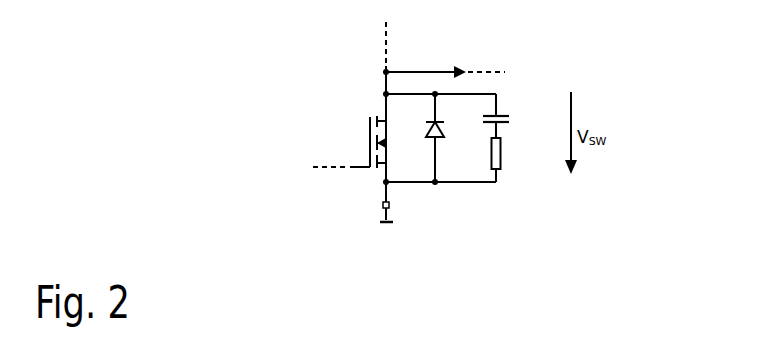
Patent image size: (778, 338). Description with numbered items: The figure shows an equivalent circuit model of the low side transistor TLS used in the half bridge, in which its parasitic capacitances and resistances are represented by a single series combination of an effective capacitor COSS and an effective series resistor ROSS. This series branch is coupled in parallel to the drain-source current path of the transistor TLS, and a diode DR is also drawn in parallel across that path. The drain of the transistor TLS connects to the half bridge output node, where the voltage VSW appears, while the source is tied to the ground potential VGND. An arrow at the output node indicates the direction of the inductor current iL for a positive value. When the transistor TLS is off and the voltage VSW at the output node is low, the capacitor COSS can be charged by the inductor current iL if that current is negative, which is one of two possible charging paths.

The voltage at the half bridge output node VSW is at (386, 72).
The inductor current iL is at (445, 63).
The low side transistor TLS is at (349, 142).
The rectifier diode DR is at (444, 142).
The effective capacitor COSS is at (516, 124).
The effective series resistor ROSS is at (520, 155).
The ground potential VGND is at (383, 210).